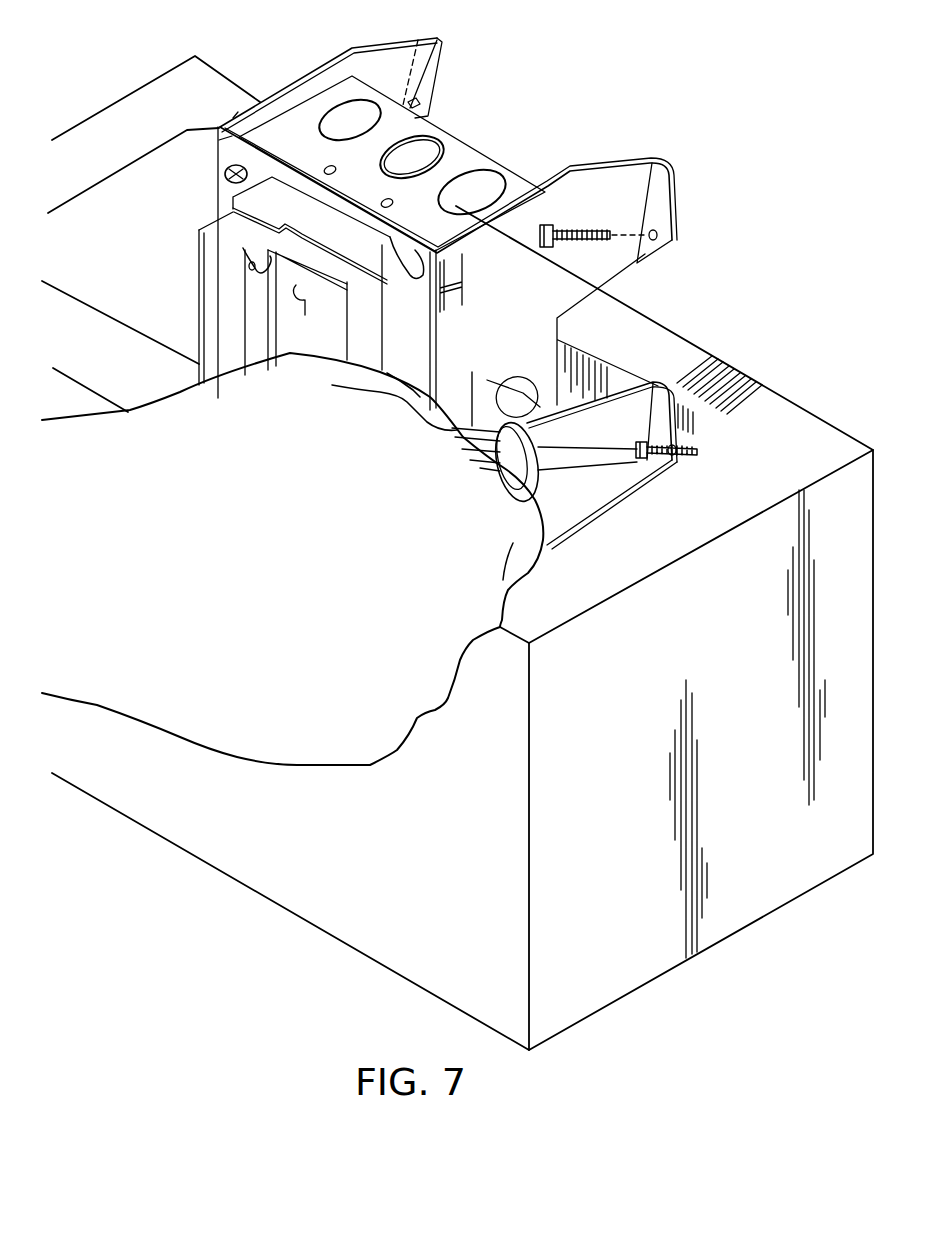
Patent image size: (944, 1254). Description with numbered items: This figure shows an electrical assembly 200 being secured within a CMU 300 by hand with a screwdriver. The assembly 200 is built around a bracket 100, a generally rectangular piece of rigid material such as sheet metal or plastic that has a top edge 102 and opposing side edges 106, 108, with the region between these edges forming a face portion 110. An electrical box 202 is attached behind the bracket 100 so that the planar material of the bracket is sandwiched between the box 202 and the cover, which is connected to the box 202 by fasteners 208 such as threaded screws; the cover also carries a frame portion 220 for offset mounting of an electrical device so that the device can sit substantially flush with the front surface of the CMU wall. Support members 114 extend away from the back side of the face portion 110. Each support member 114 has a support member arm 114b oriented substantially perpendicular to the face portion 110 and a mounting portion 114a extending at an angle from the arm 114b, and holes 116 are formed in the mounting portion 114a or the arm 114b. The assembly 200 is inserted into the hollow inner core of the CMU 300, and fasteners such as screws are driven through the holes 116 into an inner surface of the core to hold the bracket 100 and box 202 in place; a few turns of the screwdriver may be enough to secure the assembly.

The bracket 100 is at (343, 276).
The top edge 102 is at (392, 146).
The side edge 106 is at (233, 118).
The side edge 108 is at (440, 393).
The face portion 110 is at (220, 140).
The support member 114 is at (564, 274).
The mounting portion 114a is at (667, 210).
The support member arm 114b is at (550, 310).
The hole 116 is at (427, 105).
The electrical assembly 200 is at (496, 274).
The electrical box 202 is at (503, 160).
The fastener 208 is at (225, 182).
The frame portion 220 is at (197, 362).
The CMU 300 is at (730, 370).